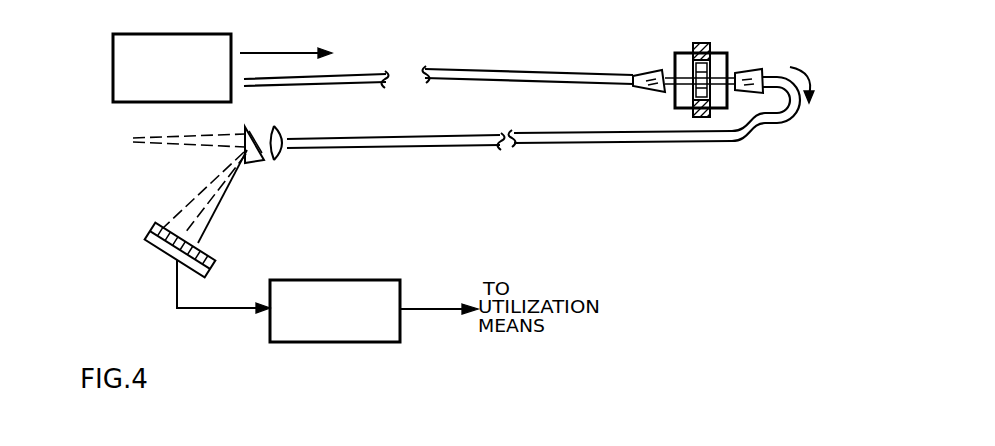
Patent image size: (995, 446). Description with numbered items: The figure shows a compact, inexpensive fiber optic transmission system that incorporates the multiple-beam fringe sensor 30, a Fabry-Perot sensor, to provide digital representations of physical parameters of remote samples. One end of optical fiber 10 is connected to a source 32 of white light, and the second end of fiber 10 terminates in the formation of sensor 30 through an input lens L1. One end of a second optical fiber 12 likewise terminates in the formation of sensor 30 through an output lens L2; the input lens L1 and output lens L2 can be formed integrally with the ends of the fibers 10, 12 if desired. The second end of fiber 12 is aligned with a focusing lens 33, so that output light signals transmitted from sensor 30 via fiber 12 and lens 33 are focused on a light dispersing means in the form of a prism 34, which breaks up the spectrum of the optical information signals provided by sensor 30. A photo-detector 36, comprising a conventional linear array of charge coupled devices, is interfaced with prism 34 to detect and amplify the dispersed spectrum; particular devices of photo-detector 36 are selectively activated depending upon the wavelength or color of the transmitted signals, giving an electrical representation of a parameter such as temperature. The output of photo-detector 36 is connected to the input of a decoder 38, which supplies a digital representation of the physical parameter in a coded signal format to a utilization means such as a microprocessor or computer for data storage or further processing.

The optical fiber 10 is at (462, 72).
The optical fiber 12 is at (581, 145).
The multiple-beam fringe sensor 30 is at (732, 59).
The source of white light 32 is at (128, 82).
The focusing lens 33 is at (280, 128).
The prism 34 is at (258, 161).
The photo-detector 36 is at (157, 247).
The decoder 38 is at (329, 295).
The input lens L1 is at (648, 92).
The output lens L2 is at (754, 72).